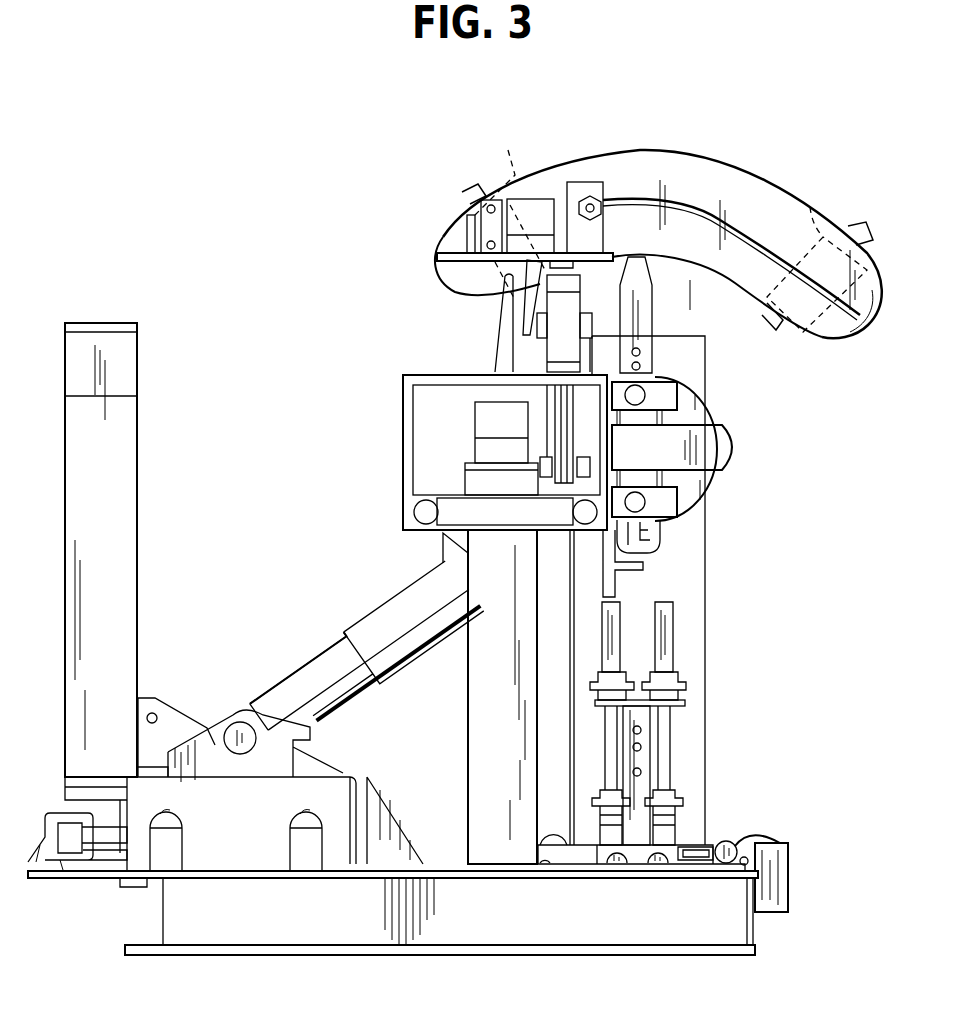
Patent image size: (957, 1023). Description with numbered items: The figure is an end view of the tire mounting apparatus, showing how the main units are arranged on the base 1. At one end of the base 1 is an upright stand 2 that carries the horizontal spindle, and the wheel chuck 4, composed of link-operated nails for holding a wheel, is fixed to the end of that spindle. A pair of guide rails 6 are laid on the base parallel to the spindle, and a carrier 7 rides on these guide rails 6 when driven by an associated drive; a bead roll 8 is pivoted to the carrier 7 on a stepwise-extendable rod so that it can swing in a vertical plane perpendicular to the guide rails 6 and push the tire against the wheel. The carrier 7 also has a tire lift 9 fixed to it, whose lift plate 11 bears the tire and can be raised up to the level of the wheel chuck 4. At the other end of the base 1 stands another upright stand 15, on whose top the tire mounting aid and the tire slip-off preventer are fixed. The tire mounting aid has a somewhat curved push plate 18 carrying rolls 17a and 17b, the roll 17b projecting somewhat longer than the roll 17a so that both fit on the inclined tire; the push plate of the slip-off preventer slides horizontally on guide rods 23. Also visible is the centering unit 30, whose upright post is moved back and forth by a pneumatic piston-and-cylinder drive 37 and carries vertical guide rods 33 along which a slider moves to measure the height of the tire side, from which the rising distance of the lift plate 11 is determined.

The base 1 is at (485, 935).
The upright stand 2 is at (707, 543).
The wheel chuck 4 is at (711, 423).
The guide rails 6 is at (182, 810).
The carrier 7 is at (205, 728).
The bead roll 8 is at (383, 625).
The tire lift 9 is at (137, 440).
The lift plate 11 is at (782, 834).
The upright stand 15 is at (475, 704).
The roll 17a is at (810, 207).
The roll 17b is at (514, 213).
The push plate 18 is at (731, 175).
The guide rods 23 is at (644, 395).
The centering unit 30 is at (690, 723).
The vertical guide rods 33 is at (672, 630).
The pneumatic piston-and-cylinder drive 37 is at (726, 838).